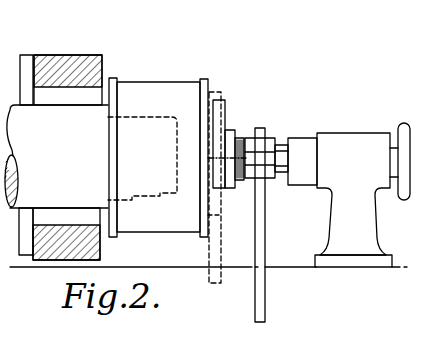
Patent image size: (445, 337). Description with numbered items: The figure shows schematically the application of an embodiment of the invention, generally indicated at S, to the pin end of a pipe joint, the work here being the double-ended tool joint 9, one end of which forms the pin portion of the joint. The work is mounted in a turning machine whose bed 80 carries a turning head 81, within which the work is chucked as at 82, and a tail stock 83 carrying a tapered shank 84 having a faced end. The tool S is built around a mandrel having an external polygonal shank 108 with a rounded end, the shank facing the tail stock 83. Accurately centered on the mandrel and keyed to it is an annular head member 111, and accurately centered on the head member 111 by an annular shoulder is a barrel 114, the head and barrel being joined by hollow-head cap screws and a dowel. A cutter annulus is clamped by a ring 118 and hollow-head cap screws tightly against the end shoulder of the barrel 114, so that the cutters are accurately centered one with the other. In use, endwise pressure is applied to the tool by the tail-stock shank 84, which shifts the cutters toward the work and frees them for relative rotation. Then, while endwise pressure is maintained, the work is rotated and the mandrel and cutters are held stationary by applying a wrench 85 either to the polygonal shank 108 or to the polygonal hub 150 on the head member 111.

The double-ended tool joint 9 is at (56, 157).
The bed of a turning machine 80 is at (303, 268).
The turning head 81 is at (77, 62).
The chuck 82 is at (44, 34).
The tail stock 83 is at (357, 140).
The tapered shank 84 is at (300, 137).
The wrench 85 is at (210, 276).
The polygonal shank 108 is at (278, 145).
The annular head member 111 is at (206, 83).
The barrel 114 is at (155, 90).
The ring 118 is at (113, 78).
The polygonal hub 150 is at (220, 103).
The reseating tool embodiment S is at (180, 73).